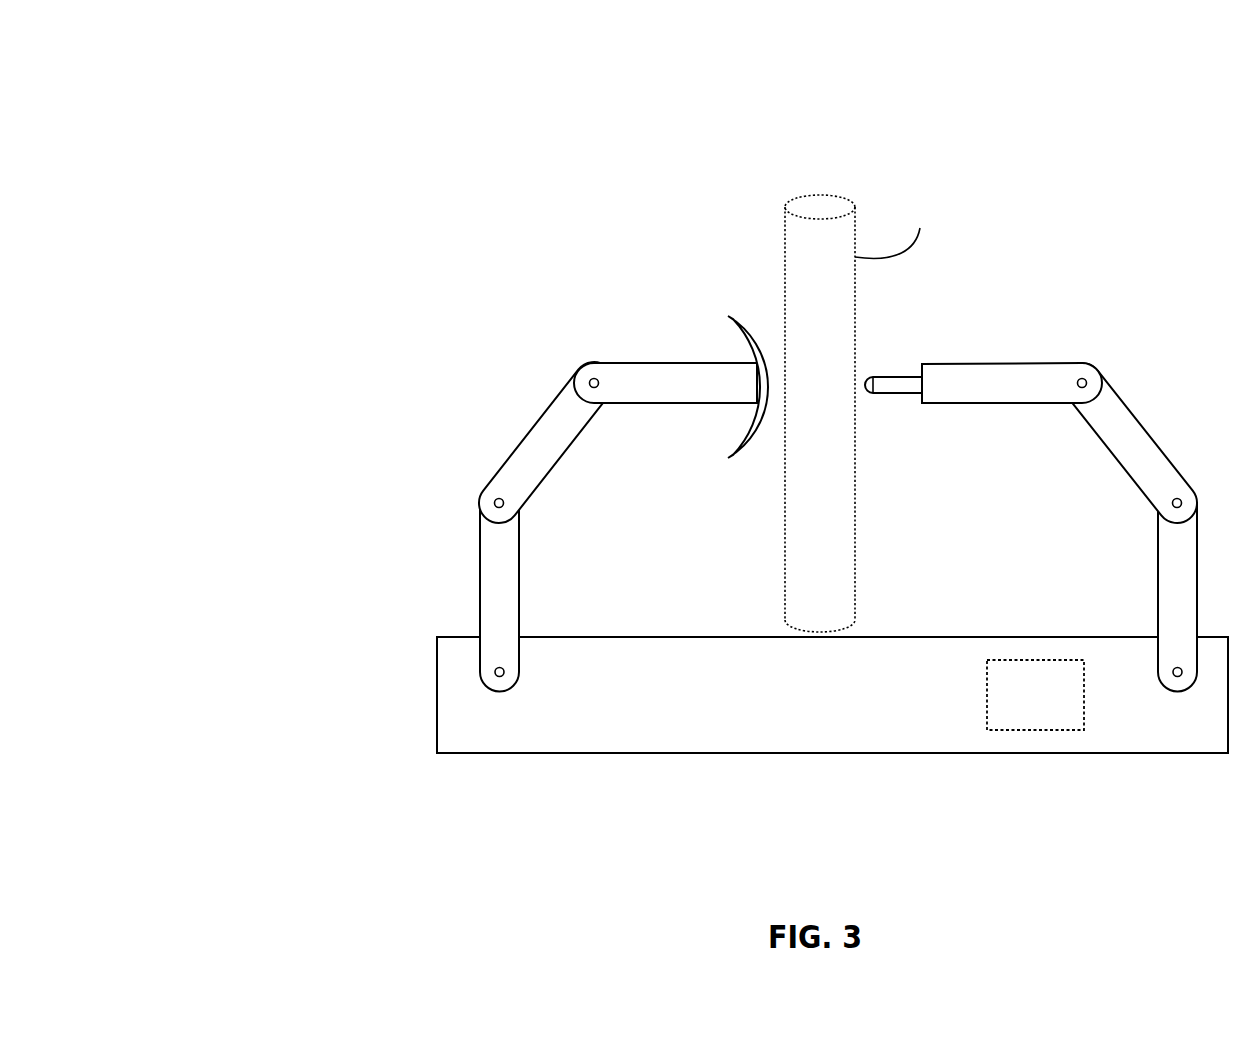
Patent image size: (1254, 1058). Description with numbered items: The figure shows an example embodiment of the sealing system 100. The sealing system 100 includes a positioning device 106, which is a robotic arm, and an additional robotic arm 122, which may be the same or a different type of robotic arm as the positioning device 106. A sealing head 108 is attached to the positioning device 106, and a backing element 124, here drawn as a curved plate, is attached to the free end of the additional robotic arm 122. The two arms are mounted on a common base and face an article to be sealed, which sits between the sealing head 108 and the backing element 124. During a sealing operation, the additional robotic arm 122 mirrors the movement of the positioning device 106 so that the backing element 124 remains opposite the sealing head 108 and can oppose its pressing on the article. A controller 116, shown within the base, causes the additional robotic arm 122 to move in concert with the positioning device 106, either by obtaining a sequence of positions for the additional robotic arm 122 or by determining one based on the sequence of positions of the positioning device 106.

The sealing system 100 is at (334, 57).
The positioning device 106 is at (1142, 393).
The sealing head 108 is at (887, 388).
The controller 116 is at (1054, 706).
The additional robotic arm 122 is at (534, 394).
The backing element 124 is at (736, 322).